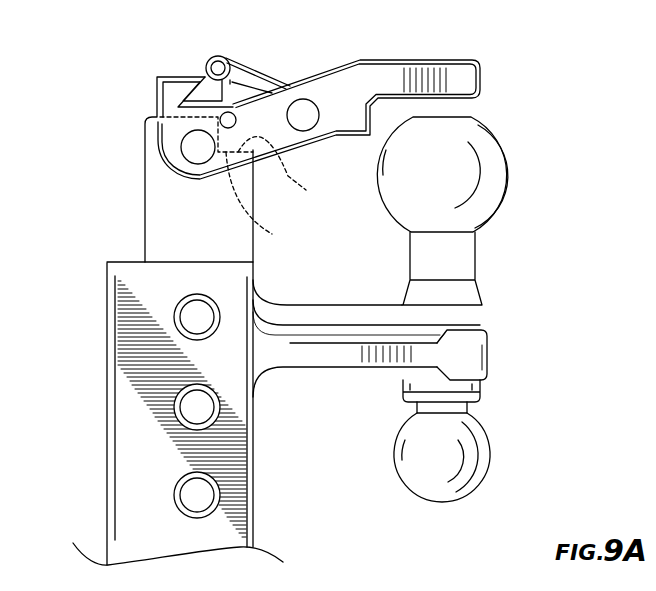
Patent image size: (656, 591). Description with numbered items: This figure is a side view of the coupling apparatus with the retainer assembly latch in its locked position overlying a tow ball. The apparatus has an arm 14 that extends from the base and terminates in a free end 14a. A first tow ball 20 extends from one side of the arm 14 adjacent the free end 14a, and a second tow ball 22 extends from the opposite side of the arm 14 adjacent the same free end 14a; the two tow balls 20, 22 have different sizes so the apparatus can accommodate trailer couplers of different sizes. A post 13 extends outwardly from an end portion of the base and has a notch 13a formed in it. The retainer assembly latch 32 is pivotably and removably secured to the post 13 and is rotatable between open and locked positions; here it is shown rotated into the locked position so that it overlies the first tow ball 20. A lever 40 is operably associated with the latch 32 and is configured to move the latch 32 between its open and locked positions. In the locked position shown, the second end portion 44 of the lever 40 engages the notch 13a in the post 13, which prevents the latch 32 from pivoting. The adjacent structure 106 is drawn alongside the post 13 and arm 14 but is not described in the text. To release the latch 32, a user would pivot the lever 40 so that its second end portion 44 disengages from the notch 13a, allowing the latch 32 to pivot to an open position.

The adjustable mounting block / receiver clamp 106 is at (104, 383).
The post 13 is at (167, 214).
The notch 13a is at (277, 177).
The second end portion of the lever 44 is at (261, 202).
The retainer assembly latch 32 is at (458, 72).
The lever 40 is at (253, 63).
The first tow ball 20 is at (492, 190).
The arm 14 is at (331, 352).
The free end of the arm 14a is at (490, 360).
The second tow ball 22 is at (453, 472).